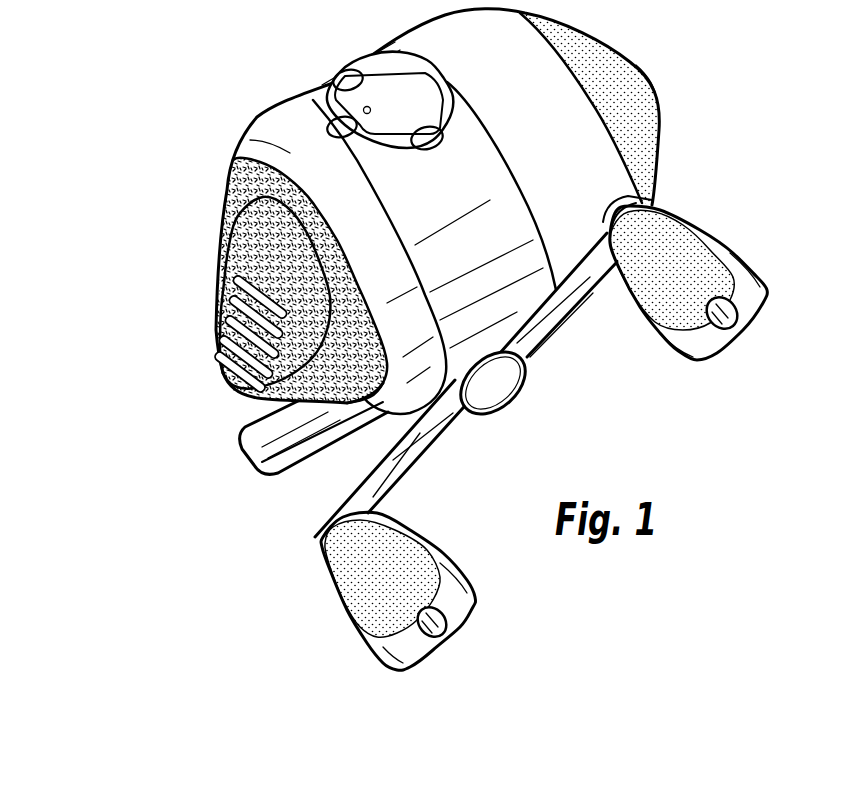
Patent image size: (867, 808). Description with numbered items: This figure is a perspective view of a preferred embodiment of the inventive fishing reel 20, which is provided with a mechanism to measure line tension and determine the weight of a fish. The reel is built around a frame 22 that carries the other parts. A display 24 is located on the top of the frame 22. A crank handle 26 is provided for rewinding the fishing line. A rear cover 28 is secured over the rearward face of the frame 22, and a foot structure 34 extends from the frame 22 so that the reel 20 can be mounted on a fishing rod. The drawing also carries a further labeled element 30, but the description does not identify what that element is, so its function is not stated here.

The fishing reel 20 is at (222, 143).
The frame 22 is at (300, 100).
The display 24 is at (452, 90).
The crank handle 26 is at (540, 337).
The rear cover 28 is at (240, 200).
The gripping pad 30 is at (210, 357).
The foot structure 34 is at (273, 463).